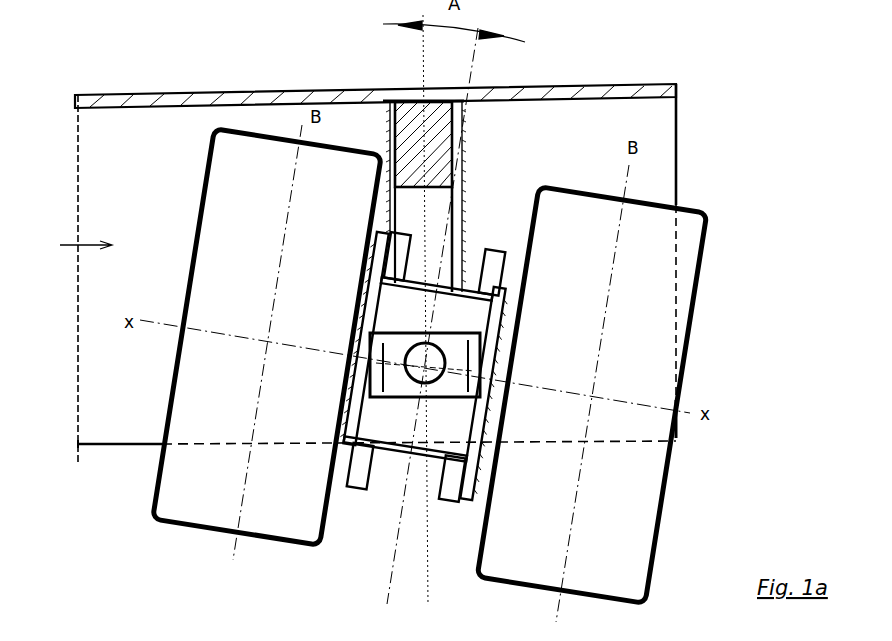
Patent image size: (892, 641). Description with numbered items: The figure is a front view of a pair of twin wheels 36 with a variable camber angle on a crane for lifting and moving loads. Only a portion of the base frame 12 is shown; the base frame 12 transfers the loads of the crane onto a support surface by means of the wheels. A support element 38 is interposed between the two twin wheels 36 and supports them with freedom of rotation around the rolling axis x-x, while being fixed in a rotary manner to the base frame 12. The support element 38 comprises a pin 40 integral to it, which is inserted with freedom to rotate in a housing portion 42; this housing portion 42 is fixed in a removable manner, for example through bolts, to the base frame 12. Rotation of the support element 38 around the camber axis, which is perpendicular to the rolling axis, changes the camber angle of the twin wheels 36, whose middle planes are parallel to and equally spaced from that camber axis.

The base frame 12 is at (368, 273).
The twin wheels 36 is at (430, 366).
The support element 38 is at (393, 420).
The pin 40 is at (432, 348).
The housing portion 42 is at (395, 379).